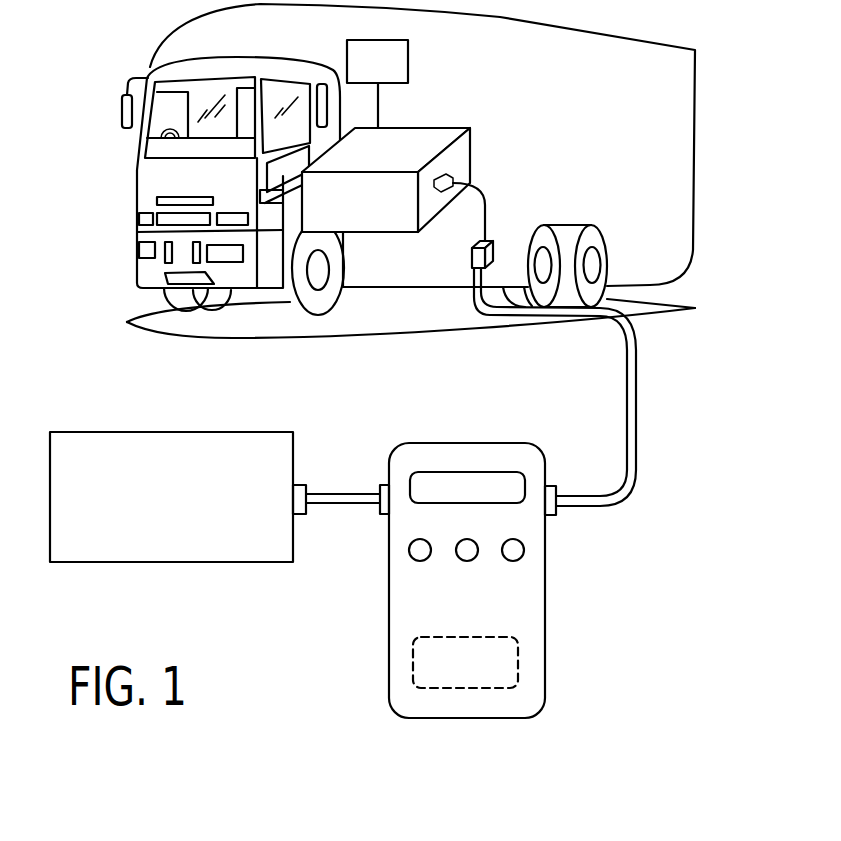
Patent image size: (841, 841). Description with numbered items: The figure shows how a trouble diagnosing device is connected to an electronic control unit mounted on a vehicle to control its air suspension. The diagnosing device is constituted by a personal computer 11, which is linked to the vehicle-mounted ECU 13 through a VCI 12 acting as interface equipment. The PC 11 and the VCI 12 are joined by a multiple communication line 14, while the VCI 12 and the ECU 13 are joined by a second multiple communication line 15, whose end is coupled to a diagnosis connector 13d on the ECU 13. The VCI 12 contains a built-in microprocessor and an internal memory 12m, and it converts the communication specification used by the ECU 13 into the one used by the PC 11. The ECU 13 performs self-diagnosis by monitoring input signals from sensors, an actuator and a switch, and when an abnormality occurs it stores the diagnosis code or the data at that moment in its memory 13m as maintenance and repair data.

The personal computer 11 is at (183, 432).
The VCI (vehicle communication interface) 12 is at (492, 443).
The memory 12m is at (518, 663).
The ECU 13 is at (417, 143).
The memory 13m is at (409, 53).
The diagnosis connector 13d is at (496, 241).
The multiple communication line 14 is at (340, 493).
The multiple communication line 15 is at (640, 448).